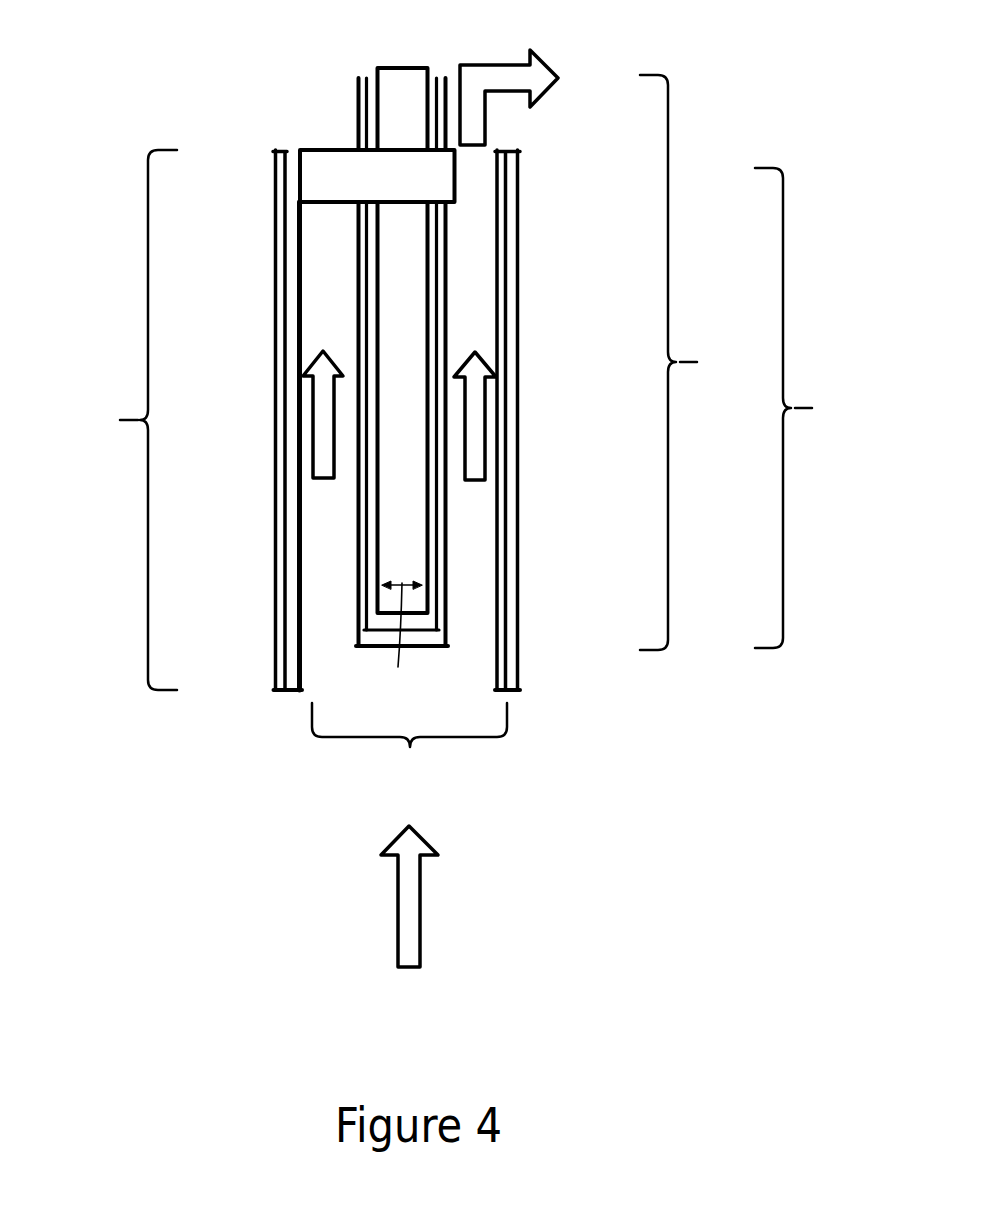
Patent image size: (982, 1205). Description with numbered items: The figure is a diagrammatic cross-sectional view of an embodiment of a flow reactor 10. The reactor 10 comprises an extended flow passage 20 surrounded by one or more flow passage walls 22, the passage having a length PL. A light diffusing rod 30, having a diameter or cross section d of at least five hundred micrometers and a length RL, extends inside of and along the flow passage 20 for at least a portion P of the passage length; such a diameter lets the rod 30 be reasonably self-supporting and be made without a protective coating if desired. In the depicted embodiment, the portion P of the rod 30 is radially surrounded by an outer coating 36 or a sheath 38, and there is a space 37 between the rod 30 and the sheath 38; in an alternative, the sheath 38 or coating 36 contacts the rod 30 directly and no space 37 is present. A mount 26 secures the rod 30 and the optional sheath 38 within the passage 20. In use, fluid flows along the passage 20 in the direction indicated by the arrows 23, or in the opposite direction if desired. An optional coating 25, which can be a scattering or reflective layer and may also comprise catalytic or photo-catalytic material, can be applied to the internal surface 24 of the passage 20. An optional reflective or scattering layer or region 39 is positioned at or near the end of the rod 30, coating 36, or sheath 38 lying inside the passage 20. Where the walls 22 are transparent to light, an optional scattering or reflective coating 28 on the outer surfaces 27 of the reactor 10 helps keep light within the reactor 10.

The flow reactor 10 is at (456, 536).
The flow passage 20 is at (337, 275).
The flow passage walls 22 is at (292, 278).
The arrows 23 is at (503, 72).
The internal surface 24 is at (322, 518).
The coating 25 is at (493, 641).
The mount 26 is at (338, 173).
The outer surfaces 27 is at (256, 381).
The coating 28 is at (278, 640).
The light diffusing rod 30 is at (418, 295).
The outer coating 36 is at (333, 344).
The space 37 is at (367, 62).
The sheath 38 is at (358, 117).
The reflective or scattering layer or region 39 is at (390, 617).